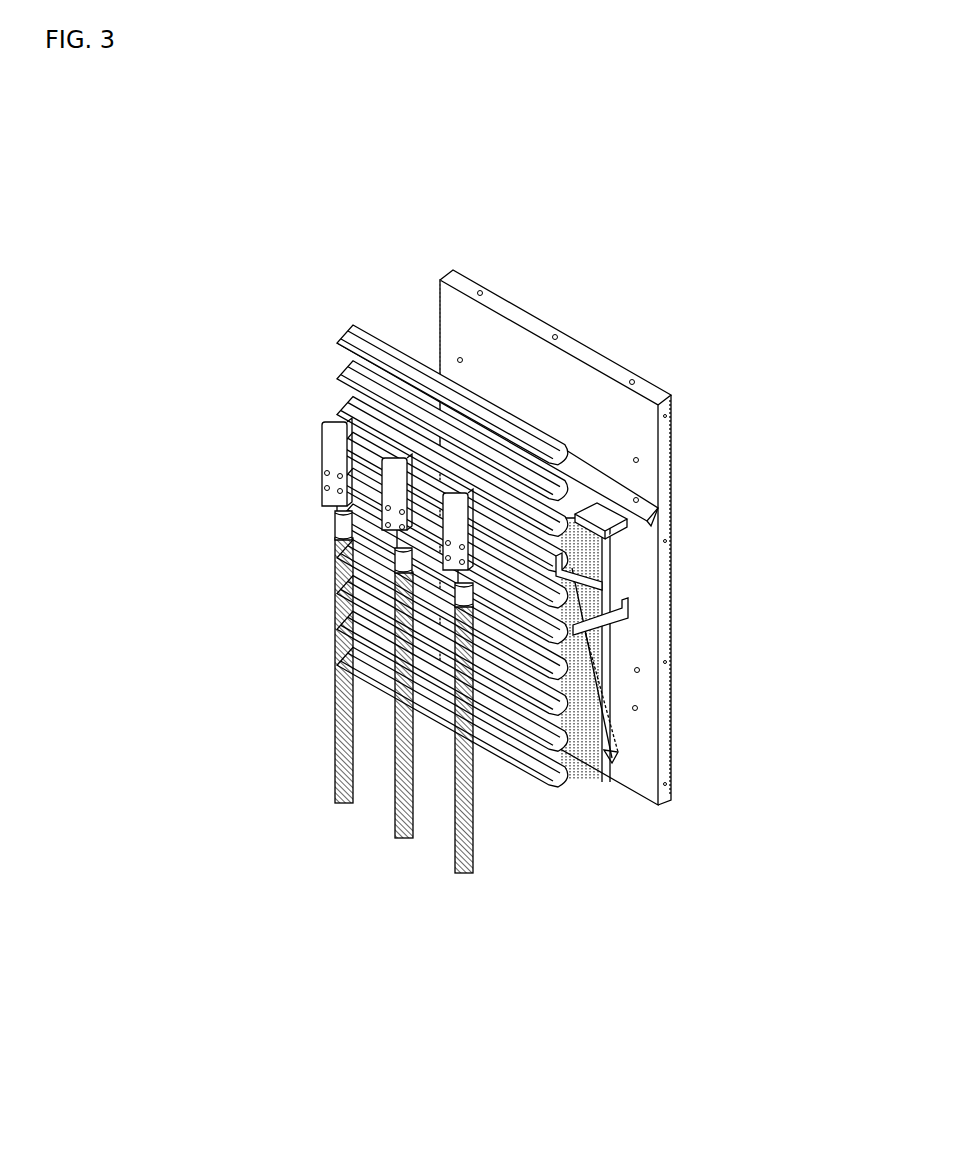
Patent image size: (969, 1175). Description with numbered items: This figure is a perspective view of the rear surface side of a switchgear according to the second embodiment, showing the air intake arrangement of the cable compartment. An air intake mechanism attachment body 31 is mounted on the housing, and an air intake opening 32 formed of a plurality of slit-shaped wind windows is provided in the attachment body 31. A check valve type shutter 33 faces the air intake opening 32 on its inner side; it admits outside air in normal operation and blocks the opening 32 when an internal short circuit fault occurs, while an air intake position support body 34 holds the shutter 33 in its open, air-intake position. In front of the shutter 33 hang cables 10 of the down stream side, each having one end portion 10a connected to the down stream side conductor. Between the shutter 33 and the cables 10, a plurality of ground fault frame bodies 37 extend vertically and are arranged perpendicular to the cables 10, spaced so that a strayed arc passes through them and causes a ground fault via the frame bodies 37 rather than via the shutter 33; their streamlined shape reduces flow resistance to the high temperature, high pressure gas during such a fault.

The cable 10 is at (335, 707).
The one end portion of the cable 10a is at (335, 453).
The air intake mechanism attachment body 31 is at (671, 464).
The air intake opening 32 is at (595, 562).
The check valve type shutter 33 is at (578, 707).
The air intake position support body 34 is at (622, 630).
The ground fault frame body 37 is at (395, 360).